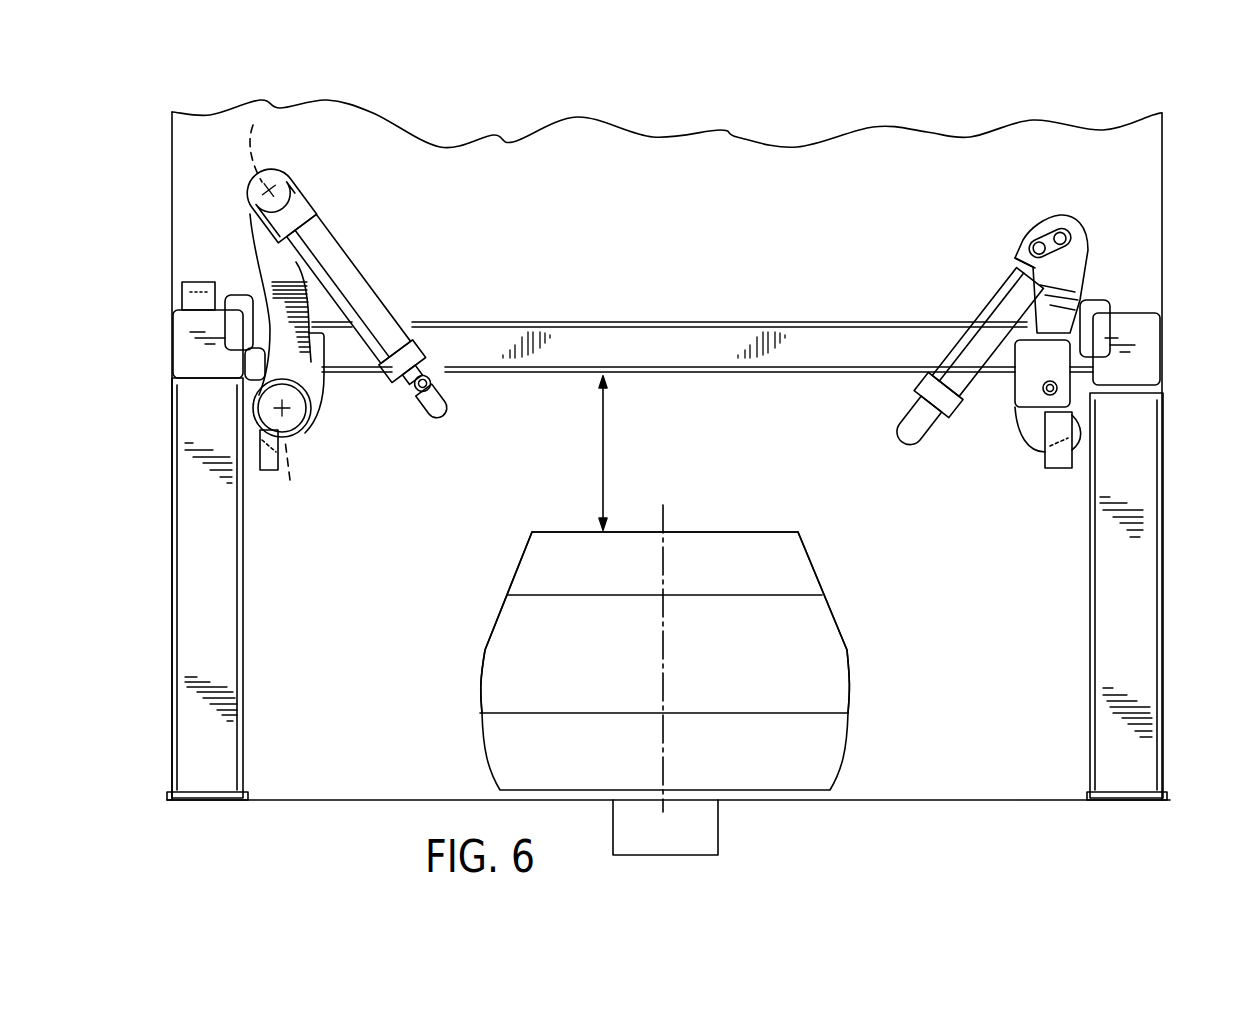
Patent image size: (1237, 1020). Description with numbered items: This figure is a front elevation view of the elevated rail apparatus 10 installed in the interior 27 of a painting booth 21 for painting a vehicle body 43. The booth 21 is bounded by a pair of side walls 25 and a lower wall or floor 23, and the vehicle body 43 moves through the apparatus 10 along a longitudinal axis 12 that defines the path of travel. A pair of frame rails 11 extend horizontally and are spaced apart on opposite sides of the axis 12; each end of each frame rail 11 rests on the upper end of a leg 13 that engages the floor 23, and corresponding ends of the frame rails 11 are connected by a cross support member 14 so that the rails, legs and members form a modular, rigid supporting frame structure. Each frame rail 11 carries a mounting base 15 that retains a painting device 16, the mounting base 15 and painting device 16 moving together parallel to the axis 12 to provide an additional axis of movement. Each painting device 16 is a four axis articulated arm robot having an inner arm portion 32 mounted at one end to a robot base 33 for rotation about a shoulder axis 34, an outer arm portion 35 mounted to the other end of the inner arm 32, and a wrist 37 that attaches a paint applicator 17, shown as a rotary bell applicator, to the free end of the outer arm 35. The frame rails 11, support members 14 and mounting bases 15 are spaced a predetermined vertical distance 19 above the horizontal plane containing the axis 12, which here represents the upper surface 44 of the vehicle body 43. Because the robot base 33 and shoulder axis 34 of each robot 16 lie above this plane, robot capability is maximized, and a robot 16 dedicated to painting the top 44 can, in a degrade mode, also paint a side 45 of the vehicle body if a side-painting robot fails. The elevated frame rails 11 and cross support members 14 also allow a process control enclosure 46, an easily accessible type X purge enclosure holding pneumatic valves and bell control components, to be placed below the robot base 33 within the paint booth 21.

The elevated rail apparatus 10 is at (903, 258).
The frame rail 11 is at (172, 350).
The axis 12 is at (668, 505).
The leg 13 is at (222, 588).
The cross support member 14 is at (690, 335).
The mounting base 15 is at (240, 295).
The painting device 16 is at (310, 186).
The paint applicator 17 is at (422, 420).
The predetermined vertical distance 19 is at (603, 440).
The painting booth 21 is at (748, 133).
The floor 23 is at (310, 800).
The side wall 25 is at (172, 213).
The interior 27 is at (615, 195).
The inner arm portion 32 is at (258, 237).
The robot base 33 is at (323, 383).
The shoulder axis 34 is at (255, 118).
The outer arm portion 35 is at (360, 285).
The wrist 37 is at (415, 392).
The vehicle body 43 is at (815, 565).
The upper surface 44 is at (745, 532).
The side 45 is at (484, 650).
The process control enclosure 46 is at (283, 448).